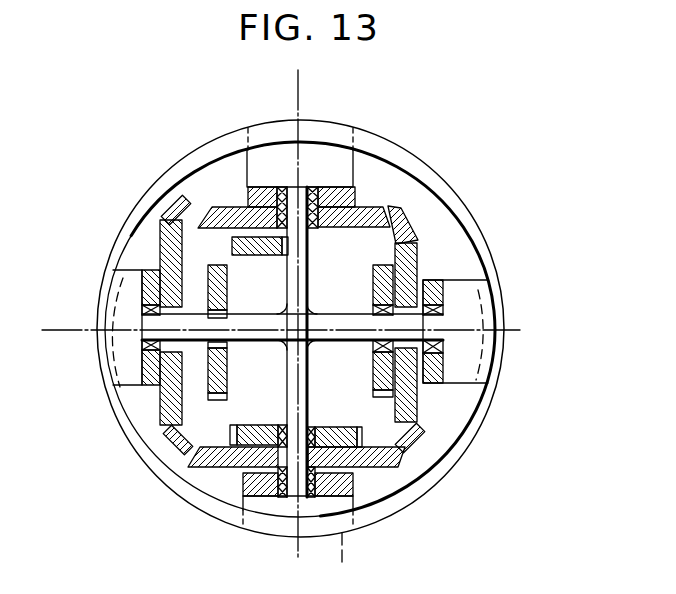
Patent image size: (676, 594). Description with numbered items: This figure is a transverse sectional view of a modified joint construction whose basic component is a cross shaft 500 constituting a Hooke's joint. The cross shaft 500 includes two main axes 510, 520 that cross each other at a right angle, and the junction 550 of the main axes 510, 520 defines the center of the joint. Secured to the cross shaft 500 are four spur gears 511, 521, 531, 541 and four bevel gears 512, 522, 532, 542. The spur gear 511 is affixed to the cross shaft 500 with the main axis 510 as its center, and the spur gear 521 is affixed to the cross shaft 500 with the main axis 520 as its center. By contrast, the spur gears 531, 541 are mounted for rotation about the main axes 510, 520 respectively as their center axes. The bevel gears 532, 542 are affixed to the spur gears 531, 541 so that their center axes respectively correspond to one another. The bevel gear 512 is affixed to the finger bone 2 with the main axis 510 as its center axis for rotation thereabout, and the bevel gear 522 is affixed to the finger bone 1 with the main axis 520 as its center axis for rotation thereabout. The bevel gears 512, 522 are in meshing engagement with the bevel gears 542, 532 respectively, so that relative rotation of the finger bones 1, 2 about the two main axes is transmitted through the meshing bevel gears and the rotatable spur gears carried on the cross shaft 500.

The cross shaft 500 is at (137, 343).
The main axis 510 is at (56, 330).
The main axis 520 is at (297, 109).
The spur gear 511 is at (224, 357).
The spur gear 521 is at (251, 250).
The spur gear 531 is at (375, 292).
The spur gear 541 is at (340, 428).
The bevel gear 512 is at (157, 430).
The bevel gear 522 is at (378, 210).
The bevel gear 532 is at (415, 405).
The bevel gear 542 is at (392, 466).
The junction 550 is at (313, 345).
The finger bone 1 is at (354, 190).
The finger bone 2 is at (130, 281).